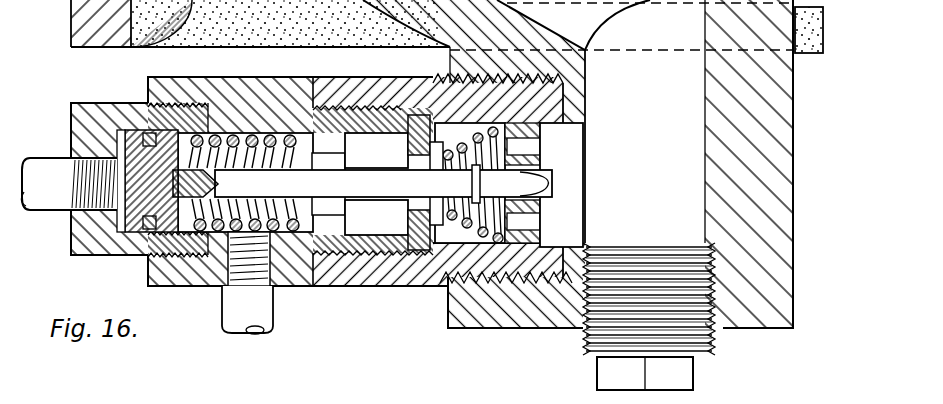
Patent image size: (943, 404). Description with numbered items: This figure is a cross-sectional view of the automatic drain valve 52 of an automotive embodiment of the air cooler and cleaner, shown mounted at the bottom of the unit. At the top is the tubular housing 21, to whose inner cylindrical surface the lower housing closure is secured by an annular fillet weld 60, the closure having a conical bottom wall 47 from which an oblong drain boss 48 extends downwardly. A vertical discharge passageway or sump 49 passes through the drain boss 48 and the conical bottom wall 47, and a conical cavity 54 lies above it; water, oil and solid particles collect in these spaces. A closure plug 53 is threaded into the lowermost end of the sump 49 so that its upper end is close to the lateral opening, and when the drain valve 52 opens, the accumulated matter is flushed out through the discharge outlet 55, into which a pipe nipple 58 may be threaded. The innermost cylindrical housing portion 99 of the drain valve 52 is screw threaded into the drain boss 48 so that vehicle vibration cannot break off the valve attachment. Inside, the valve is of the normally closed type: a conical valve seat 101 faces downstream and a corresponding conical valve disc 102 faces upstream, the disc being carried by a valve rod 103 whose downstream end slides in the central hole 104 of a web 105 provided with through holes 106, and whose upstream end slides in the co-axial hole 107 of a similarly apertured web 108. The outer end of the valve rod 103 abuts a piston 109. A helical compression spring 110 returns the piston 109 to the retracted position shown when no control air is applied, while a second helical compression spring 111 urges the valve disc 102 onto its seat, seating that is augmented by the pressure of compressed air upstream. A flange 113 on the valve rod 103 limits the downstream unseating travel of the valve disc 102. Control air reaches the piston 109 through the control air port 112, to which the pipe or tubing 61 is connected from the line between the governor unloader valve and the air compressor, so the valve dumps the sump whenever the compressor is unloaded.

The tubular housing 21 is at (80, 14).
The conical bottom wall 47 is at (374, 45).
The oblong drain boss 48 is at (758, 326).
The vertical discharge passageway or sump 49 is at (621, 50).
The automatic drain valve 52 is at (150, 88).
The closure plug 53 is at (680, 375).
The conical cavity 54 is at (568, 38).
The discharge outlet 55 is at (222, 288).
The pipe nipple 58 is at (272, 334).
The annular fillet weld 60 is at (178, 40).
The pipe or tubing 61 is at (44, 165).
The innermost cylindrical housing portion 99 is at (370, 286).
The conical valve seat 101 is at (412, 140).
The conical valve disc 102 is at (430, 203).
The valve rod 103 is at (383, 183).
The central hole 104 is at (560, 188).
The web 105 is at (535, 163).
The through holes 106 is at (528, 148).
The co-axial hole 107 is at (322, 175).
The apertured web 108 is at (316, 166).
The piston 109 is at (152, 262).
The helical compression spring 110 is at (213, 133).
The helical compression spring 111 is at (462, 228).
The control air port 112 is at (75, 233).
The flange 113 is at (481, 178).